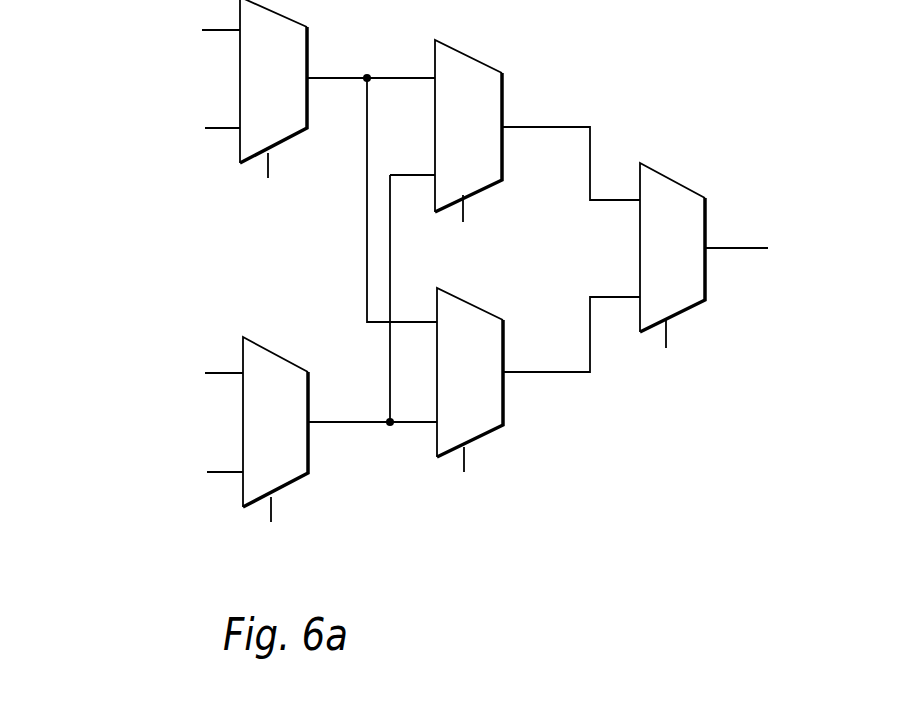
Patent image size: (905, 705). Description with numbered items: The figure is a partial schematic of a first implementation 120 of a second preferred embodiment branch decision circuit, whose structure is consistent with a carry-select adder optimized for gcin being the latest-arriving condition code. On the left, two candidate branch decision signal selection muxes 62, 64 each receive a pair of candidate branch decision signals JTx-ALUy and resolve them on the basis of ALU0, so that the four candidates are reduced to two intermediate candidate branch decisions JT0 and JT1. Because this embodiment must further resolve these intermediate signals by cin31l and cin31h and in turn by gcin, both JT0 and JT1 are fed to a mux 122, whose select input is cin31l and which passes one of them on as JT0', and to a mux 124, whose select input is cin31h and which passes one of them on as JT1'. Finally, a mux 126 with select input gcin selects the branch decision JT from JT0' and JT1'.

The first implementation of second preferred embodiment branch decision circuit 120 is at (212, 281).
The candidate branch decision signal selection mux 64 is at (294, 100).
The candidate branch decision signal selection mux 62 is at (294, 445).
The mux 124 is at (492, 147).
The mux 122 is at (492, 393).
The mux 126 is at (692, 269).